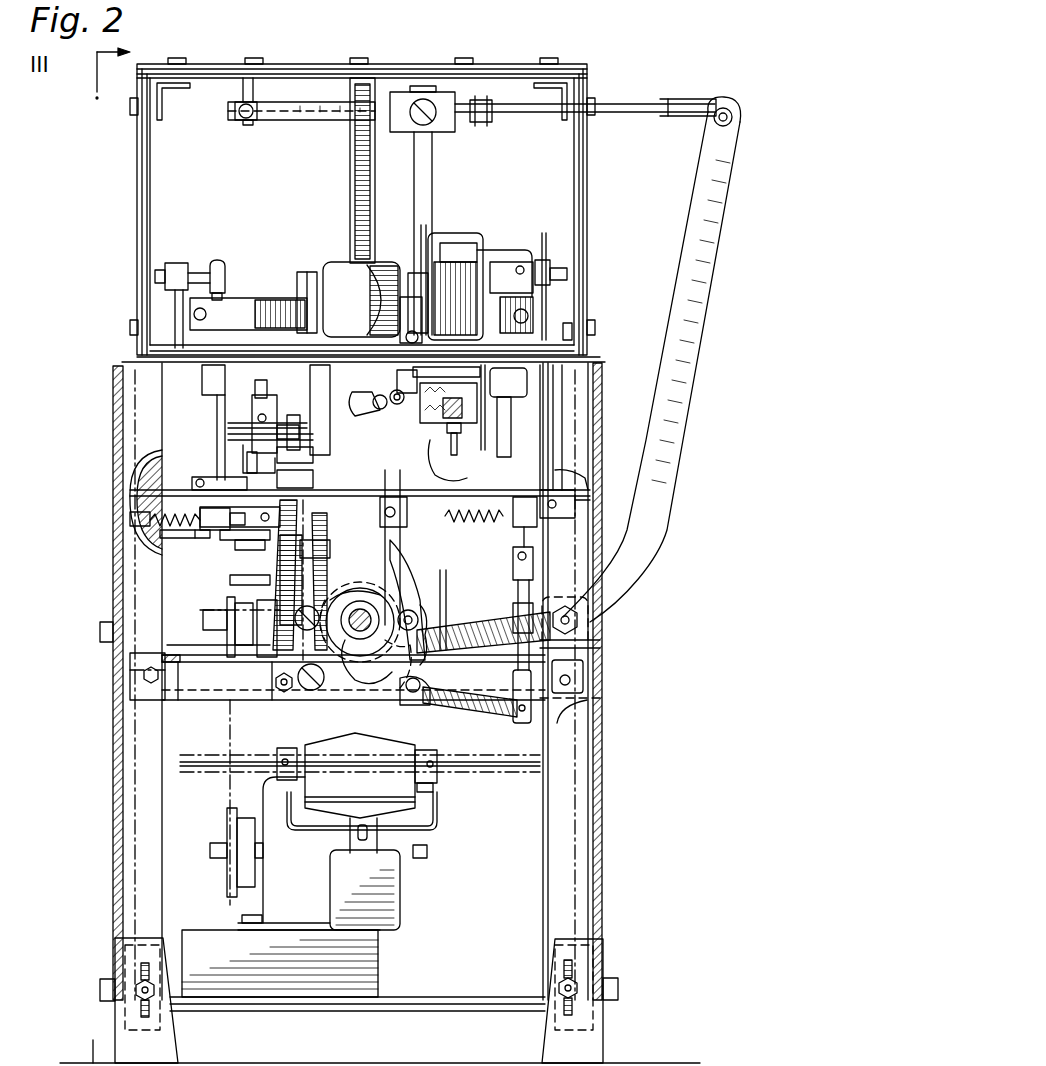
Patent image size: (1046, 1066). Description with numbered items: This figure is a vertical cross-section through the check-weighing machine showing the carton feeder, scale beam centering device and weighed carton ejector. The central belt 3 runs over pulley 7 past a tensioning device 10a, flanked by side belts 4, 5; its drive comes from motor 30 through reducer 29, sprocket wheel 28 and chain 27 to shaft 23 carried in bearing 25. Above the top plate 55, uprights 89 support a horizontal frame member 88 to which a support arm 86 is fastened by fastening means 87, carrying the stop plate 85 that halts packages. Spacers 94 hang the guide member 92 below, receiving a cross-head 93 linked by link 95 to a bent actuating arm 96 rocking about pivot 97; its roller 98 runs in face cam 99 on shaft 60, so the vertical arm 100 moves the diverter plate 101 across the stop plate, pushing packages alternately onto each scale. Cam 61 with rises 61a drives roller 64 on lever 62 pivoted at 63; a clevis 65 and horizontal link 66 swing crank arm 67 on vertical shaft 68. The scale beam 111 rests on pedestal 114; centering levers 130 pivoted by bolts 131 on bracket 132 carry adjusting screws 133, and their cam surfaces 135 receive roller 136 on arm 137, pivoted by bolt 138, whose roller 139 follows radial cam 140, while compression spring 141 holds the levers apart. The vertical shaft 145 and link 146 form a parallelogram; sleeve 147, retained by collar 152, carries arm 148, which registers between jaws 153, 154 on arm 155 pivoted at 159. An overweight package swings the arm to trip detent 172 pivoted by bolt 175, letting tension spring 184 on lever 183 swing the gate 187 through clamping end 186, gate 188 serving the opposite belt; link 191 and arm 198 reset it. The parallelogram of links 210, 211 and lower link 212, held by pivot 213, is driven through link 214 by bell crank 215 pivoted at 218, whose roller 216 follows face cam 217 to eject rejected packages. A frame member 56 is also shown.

The central belt 3 is at (352, 350).
The side belt 4 is at (450, 348).
The side belt 5 is at (243, 350).
The pulley 7 is at (232, 394).
The tensioning device 10a is at (437, 826).
The shaft 23 is at (205, 614).
The bearing 25 is at (228, 645).
The chain 27 is at (232, 732).
The sprocket wheel 28 is at (228, 886).
The reducer 29 is at (427, 850).
The motor 30 is at (304, 874).
The top plate 55 is at (590, 355).
The frame side member 56 is at (125, 930).
The shaft 60 is at (362, 665).
The cam 61 is at (352, 598).
The rises 61a is at (345, 600).
The lever 62 is at (290, 570).
The pivot 63 is at (305, 690).
The roller 64 is at (298, 605).
The clevis 65 is at (282, 545).
The horizontal link 66 is at (371, 547).
The crank arm 67 is at (418, 545).
The vertically extending shaft 68 is at (398, 340).
The stop plate 85 is at (378, 290).
The support arm 86 is at (350, 192).
The fastening means 87 is at (355, 75).
The horizontal frame member 88 is at (492, 70).
The uprights 89 is at (140, 245).
The guide member 92 is at (325, 120).
The cross-head 93 is at (445, 130).
The spacers 94 is at (240, 93).
The link 95 is at (638, 120).
The actuating arm 96 is at (693, 335).
The pivot 97 is at (578, 620).
The roller 98 is at (392, 680).
The face cam 99 is at (350, 672).
The vertical arm 100 is at (432, 175).
The diverter plate 101 is at (428, 235).
The scale beam 111 is at (478, 406).
The pedestal 114 is at (240, 430).
The levers 130 is at (360, 398).
The bolts 131 is at (451, 463).
The bracket 132 is at (403, 438).
The adjusting screws 133 is at (515, 378).
The cam surfaces 135 is at (394, 385).
The roller 136 is at (365, 408).
The arm 137 is at (474, 552).
The bolt 138 is at (405, 512).
The roller 139 is at (420, 620).
The radial cam 140 is at (430, 610).
The compression spring 141 is at (463, 428).
The vertical shaft 145 is at (250, 412).
The link 146 is at (243, 452).
The sleeve 147 is at (268, 423).
The arm 148 is at (270, 432).
The collar 152 is at (262, 382).
The jaw 153 is at (235, 540).
The jaw 154 is at (252, 550).
The arm 155 is at (242, 578).
The pivot 159 is at (278, 690).
The detent 172 is at (215, 490).
The bolt 175 is at (240, 350).
The lever 183 is at (205, 538).
The tension spring 184 is at (187, 527).
The clamping end 186 is at (204, 290).
The gate 187 is at (193, 311).
The gate 188 is at (535, 295).
The link 191 is at (246, 526).
The arm 198 is at (322, 550).
The link 210 is at (565, 432).
The link 211 is at (565, 442).
The lower link 212 is at (588, 472).
The pivot 213 is at (530, 520).
The link 214 is at (532, 600).
The bell crank 215 is at (500, 707).
The roller 216 is at (445, 628).
The face cam 217 is at (447, 577).
The pivot 218 is at (418, 695).